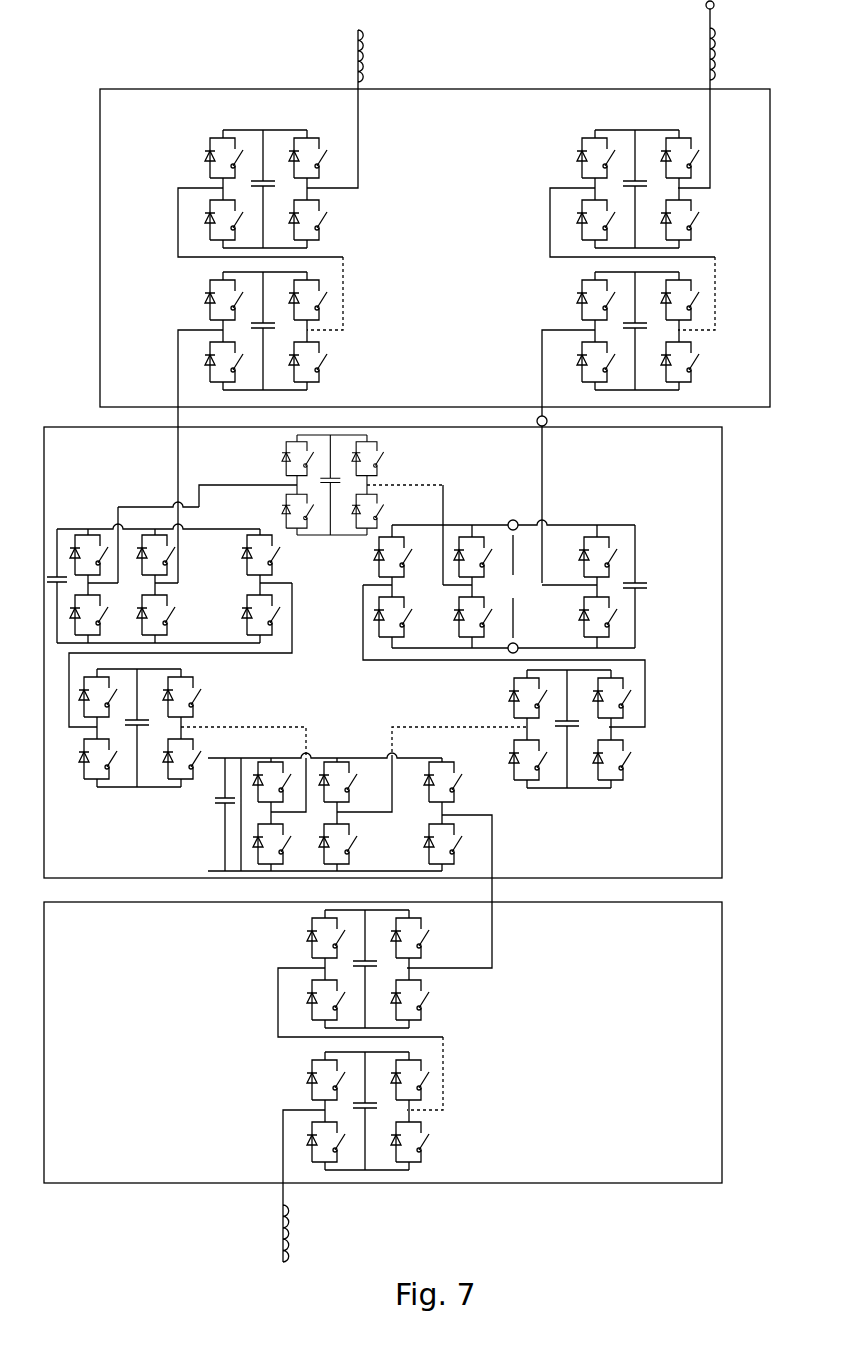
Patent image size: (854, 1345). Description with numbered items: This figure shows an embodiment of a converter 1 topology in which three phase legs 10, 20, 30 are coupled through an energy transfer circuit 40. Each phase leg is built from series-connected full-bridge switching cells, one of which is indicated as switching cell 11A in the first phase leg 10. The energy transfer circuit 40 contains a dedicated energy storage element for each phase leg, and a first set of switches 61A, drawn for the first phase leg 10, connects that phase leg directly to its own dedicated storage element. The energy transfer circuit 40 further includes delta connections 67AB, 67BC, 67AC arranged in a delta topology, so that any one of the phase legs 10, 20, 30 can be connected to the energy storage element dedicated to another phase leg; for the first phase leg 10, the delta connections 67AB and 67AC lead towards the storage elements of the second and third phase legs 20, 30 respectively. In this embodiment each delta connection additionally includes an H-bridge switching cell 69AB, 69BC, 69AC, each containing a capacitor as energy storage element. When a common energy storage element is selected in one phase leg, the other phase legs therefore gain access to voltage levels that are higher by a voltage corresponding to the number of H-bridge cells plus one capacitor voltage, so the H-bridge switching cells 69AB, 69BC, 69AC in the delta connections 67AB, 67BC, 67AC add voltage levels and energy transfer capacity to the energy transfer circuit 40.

The converter 1 is at (83, 84).
The phase leg 10 is at (315, 51).
The phase leg 20 is at (665, 40).
The phase leg 30 is at (331, 1233).
The switching cell 11A is at (192, 160).
The energy transfer circuit 40 is at (680, 463).
The first set of switches 61A is at (189, 564).
The delta connection 67AB is at (235, 485).
The delta connection 67AC is at (293, 653).
The delta connection 67BC is at (685, 652).
The H-bridge switching cell 69AB is at (330, 558).
The H-bridge switching cell 69AC is at (242, 687).
The H-bridge switching cell 69BC is at (576, 808).